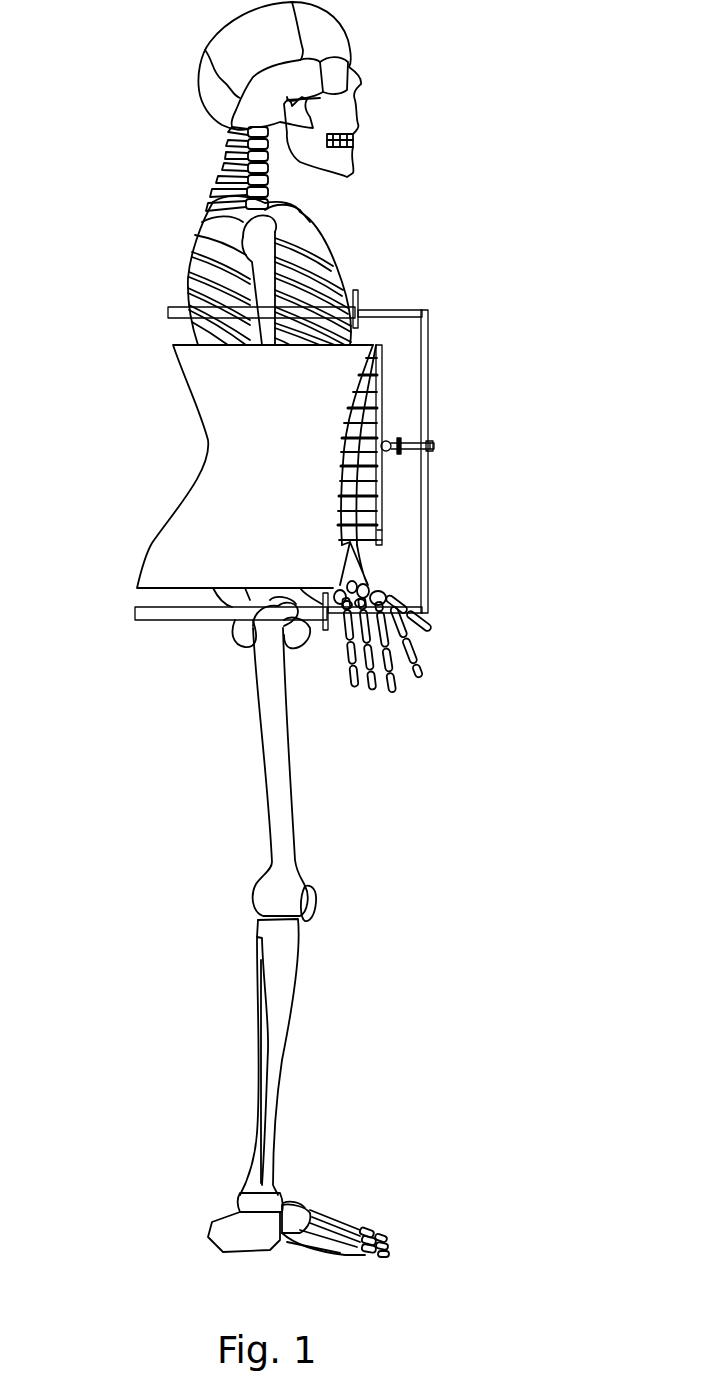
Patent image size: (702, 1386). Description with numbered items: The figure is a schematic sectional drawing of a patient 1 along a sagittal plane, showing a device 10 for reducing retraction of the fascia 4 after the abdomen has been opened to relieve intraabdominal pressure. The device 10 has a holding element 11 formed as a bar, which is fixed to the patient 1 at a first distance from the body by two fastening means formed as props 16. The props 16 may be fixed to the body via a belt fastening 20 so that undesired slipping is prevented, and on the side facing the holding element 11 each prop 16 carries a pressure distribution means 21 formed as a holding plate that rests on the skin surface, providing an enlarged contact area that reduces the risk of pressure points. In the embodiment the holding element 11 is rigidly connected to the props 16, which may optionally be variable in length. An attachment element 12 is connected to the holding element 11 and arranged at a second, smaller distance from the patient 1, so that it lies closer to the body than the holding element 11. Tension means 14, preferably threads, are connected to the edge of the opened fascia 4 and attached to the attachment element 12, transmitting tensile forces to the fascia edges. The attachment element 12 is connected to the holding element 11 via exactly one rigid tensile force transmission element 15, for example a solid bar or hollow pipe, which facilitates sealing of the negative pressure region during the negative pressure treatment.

The patient 1 is at (146, 74).
The fascia 4 is at (342, 423).
The device 10 is at (457, 307).
The holding element 11 is at (427, 403).
The attachment element 12 is at (380, 522).
The tension means 14 is at (380, 377).
The tensile force transmission element 15 is at (405, 448).
The props 16 is at (397, 312).
The belt fastening 20 is at (172, 309).
The pressure distribution means 21 is at (355, 297).